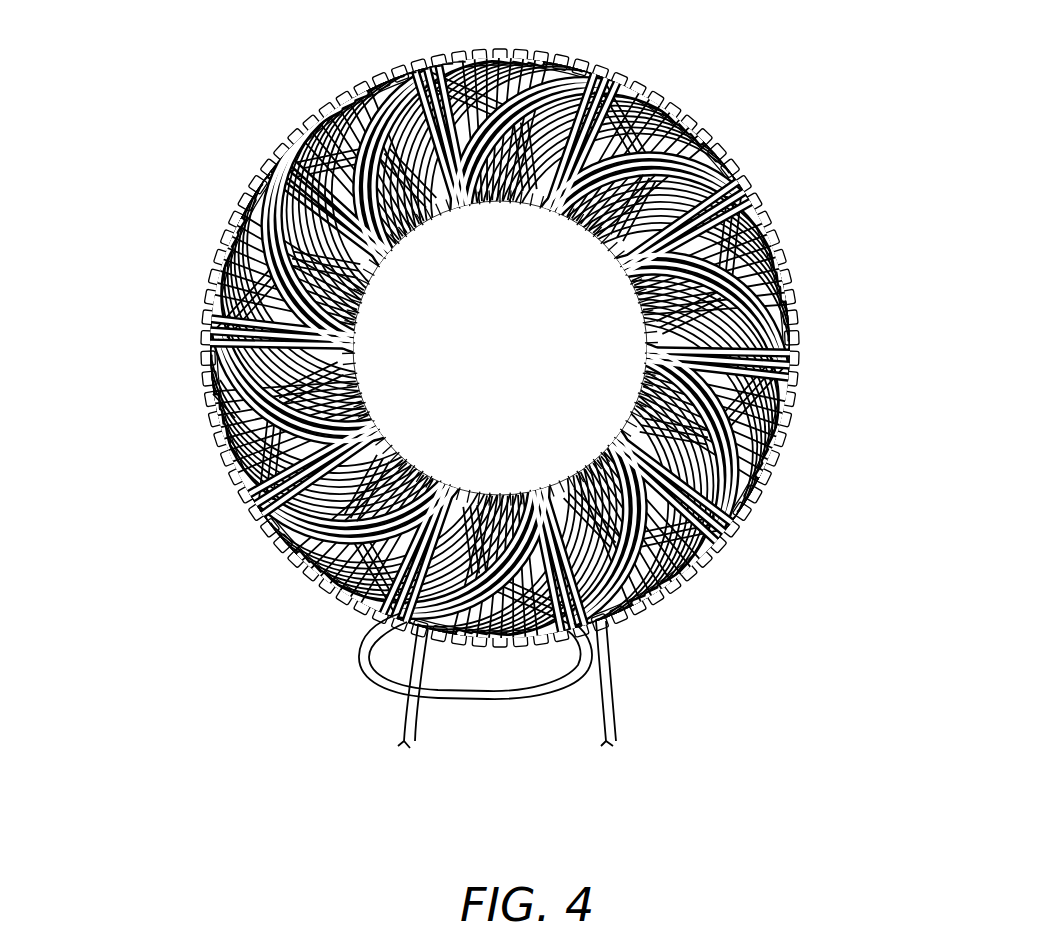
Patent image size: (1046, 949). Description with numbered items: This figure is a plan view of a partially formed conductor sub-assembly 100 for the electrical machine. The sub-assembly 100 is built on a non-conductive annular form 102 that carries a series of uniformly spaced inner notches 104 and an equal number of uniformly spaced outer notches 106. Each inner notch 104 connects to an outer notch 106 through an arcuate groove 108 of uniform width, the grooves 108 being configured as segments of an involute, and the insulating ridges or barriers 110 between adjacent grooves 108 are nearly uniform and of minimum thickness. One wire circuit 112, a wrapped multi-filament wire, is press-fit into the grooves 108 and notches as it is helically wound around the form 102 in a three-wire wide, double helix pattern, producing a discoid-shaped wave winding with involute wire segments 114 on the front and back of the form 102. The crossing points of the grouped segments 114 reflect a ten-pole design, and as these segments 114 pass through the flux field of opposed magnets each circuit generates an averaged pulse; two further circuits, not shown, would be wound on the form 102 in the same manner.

The conductor sub-assembly 100 is at (468, 395).
The non-conductive annular form 102 is at (775, 435).
The inner notches 104 is at (597, 443).
The outer notches 106 is at (203, 366).
The arcuate grooves 108 is at (225, 400).
The insulating ridges or barriers 110 is at (237, 418).
The wire circuit 112 is at (603, 713).
The involute wire segments 114 is at (300, 540).